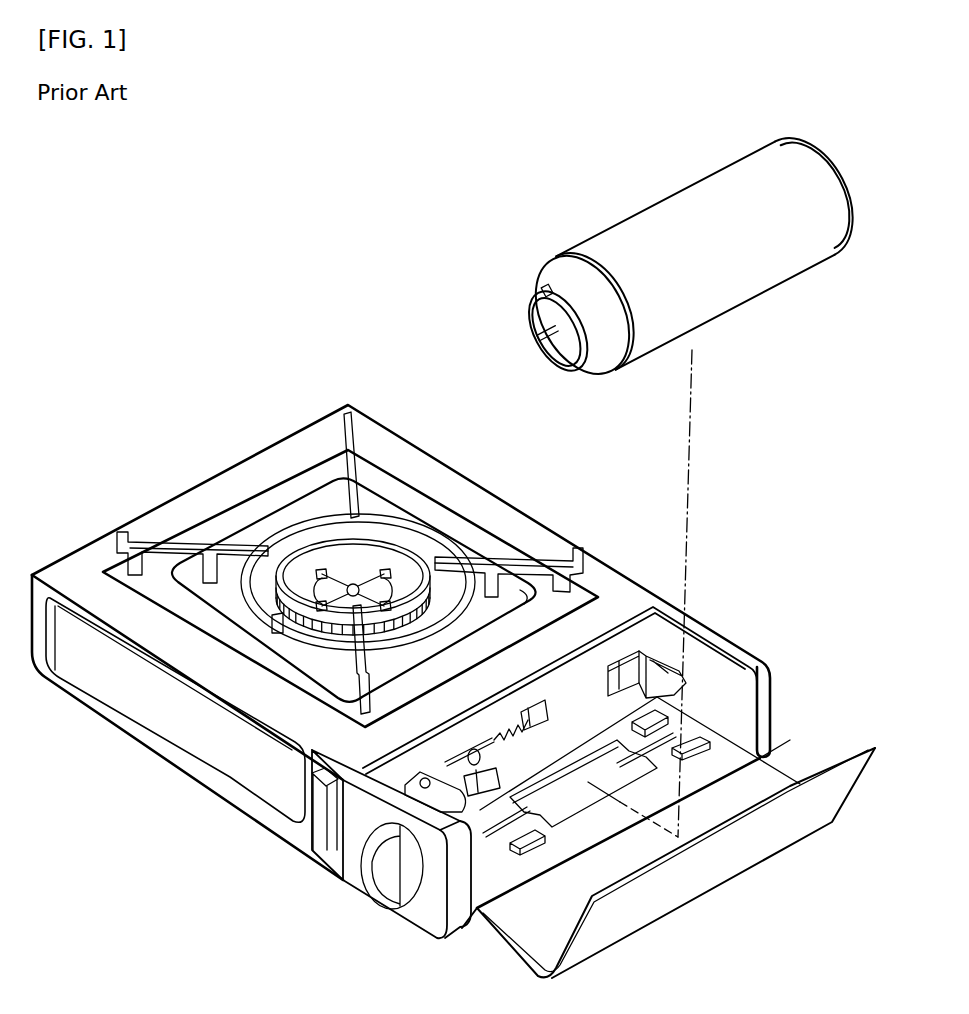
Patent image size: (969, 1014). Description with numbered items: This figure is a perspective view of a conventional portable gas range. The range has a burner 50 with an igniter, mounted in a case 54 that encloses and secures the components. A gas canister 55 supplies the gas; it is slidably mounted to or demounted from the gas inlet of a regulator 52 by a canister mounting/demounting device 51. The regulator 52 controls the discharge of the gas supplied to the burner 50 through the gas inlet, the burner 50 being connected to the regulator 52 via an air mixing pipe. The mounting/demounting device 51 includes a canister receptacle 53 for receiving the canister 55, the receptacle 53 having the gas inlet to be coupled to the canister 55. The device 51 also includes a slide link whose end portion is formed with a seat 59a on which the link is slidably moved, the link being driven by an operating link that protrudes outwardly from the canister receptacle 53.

The burner 50 is at (317, 562).
The canister mounting/demounting device 51 is at (557, 705).
The regulator 52 is at (397, 765).
The canister receptacle 53 is at (497, 862).
The case 54 is at (402, 436).
The canister 55 is at (765, 283).
The seat 59a is at (663, 677).